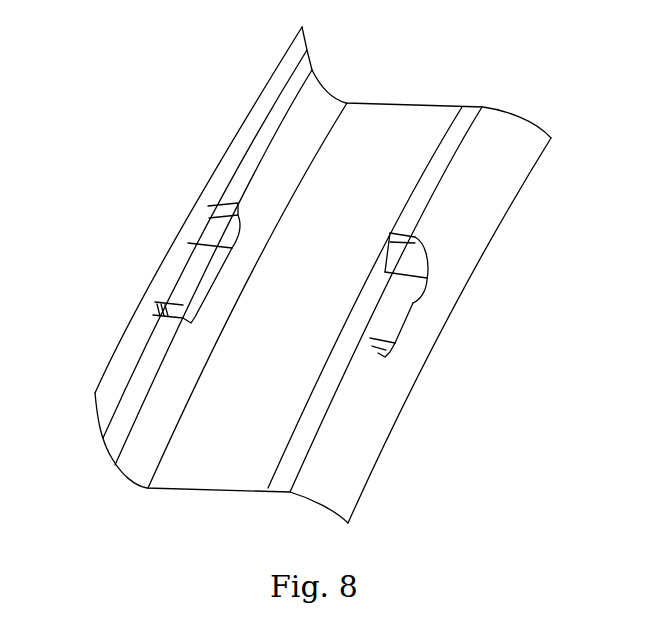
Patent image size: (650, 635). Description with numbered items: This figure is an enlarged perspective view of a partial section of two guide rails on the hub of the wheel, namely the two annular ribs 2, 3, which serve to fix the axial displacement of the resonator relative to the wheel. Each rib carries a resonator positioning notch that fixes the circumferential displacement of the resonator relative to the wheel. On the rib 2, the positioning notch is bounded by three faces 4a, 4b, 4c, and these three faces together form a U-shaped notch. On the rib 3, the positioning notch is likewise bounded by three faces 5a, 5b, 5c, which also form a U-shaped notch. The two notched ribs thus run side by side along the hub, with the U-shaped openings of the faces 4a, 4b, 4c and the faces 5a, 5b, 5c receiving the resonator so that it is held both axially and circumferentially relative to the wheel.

The annular rib 2 is at (285, 140).
The annular rib 3 is at (342, 433).
The face of resonator positioning notch 4a is at (211, 222).
The face of resonator positioning notch 4b is at (190, 280).
The face of resonator positioning notch 4c is at (168, 308).
The face of resonator positioning notch 5a is at (420, 262).
The face of resonator positioning notch 5b is at (395, 312).
The face of resonator positioning notch 5c is at (418, 346).